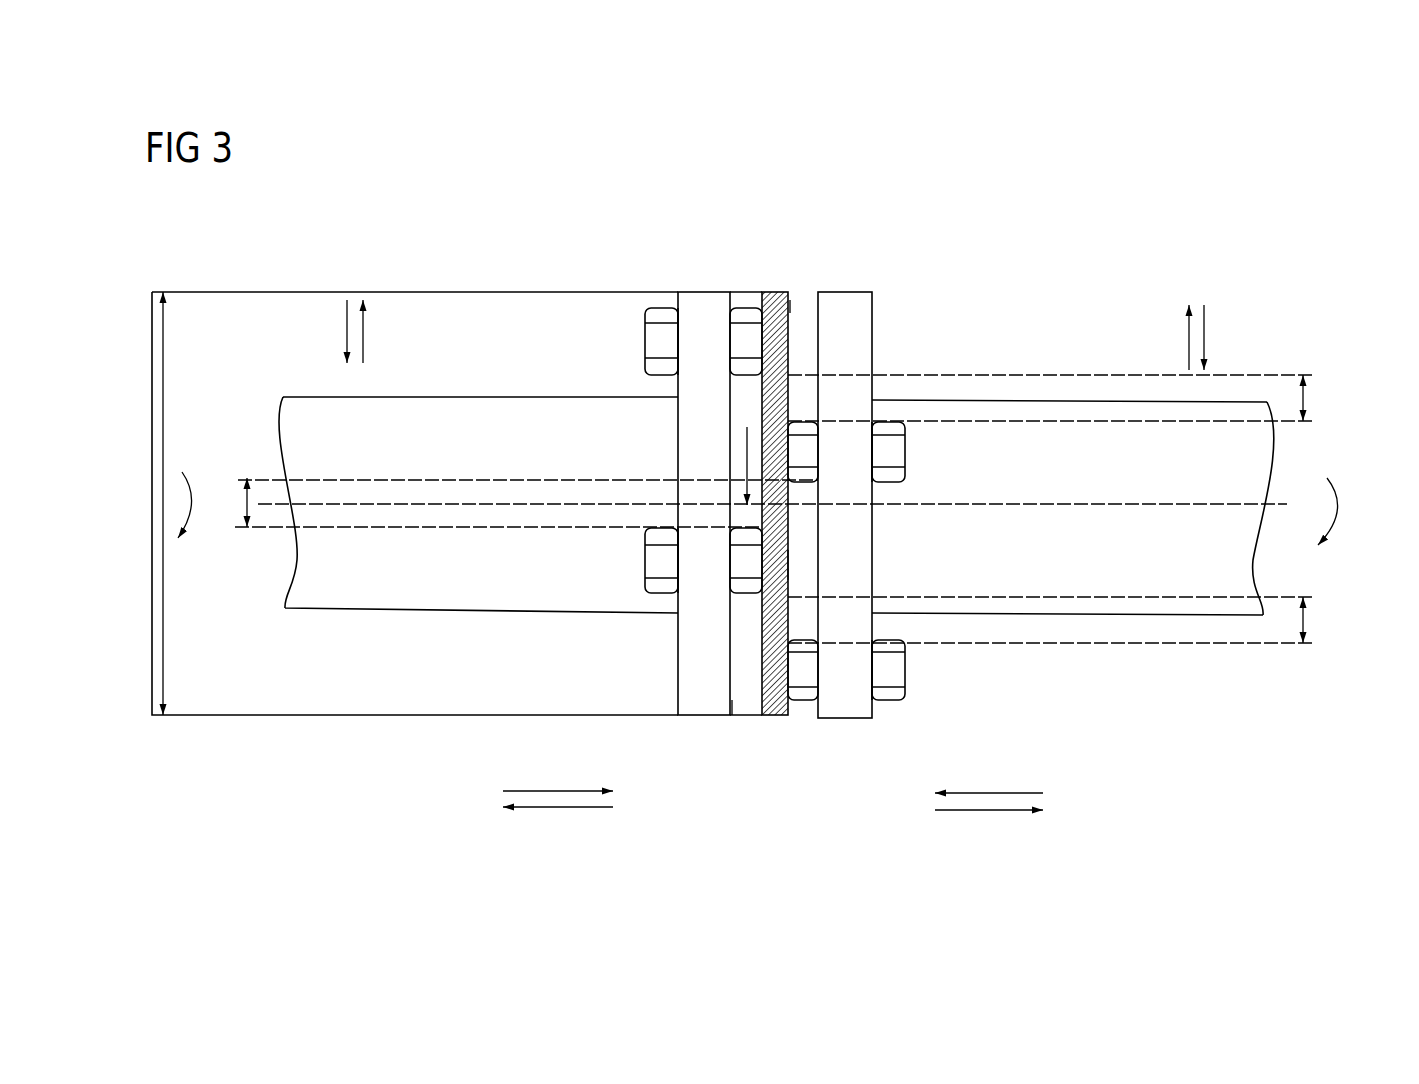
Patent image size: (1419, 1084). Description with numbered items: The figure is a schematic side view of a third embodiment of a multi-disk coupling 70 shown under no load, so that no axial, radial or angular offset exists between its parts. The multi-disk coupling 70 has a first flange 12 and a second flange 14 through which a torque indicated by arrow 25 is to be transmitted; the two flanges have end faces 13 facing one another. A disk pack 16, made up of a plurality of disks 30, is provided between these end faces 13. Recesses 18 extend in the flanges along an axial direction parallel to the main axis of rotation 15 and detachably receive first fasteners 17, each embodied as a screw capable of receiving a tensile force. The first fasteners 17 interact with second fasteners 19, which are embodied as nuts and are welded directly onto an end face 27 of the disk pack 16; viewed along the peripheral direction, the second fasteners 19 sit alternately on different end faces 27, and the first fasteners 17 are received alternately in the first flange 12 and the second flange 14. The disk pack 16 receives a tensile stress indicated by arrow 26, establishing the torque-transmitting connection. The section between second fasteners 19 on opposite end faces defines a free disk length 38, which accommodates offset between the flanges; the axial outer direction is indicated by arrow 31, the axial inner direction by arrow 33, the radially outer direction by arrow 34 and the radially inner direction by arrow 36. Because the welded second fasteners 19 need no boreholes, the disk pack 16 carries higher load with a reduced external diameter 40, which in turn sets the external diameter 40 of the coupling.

The multi-disk coupling 70 is at (229, 266).
The first flange 12 is at (690, 292).
The end face 13 is at (810, 313).
The second flange 14 is at (843, 292).
The main axis of rotation 15 is at (1218, 504).
The disk pack 16 is at (797, 566).
The first fastener 17 is at (645, 341).
The recess 18 is at (668, 302).
The second fastener 19 is at (743, 305).
The arrow indicating torque 25 is at (192, 527).
The arrow indicating tensile stress 26 is at (755, 475).
The end face of the disk pack 27 is at (755, 418).
The disk 30 is at (782, 292).
The arrow indicating axial outer direction 31 is at (556, 810).
The arrow indicating axial inner direction 33 is at (556, 788).
The arrow indicating radially outer direction 34 is at (365, 333).
The arrow indicating radially inner direction 36 is at (345, 333).
The free disk length 38 is at (247, 480).
The external diameter 40 is at (160, 500).